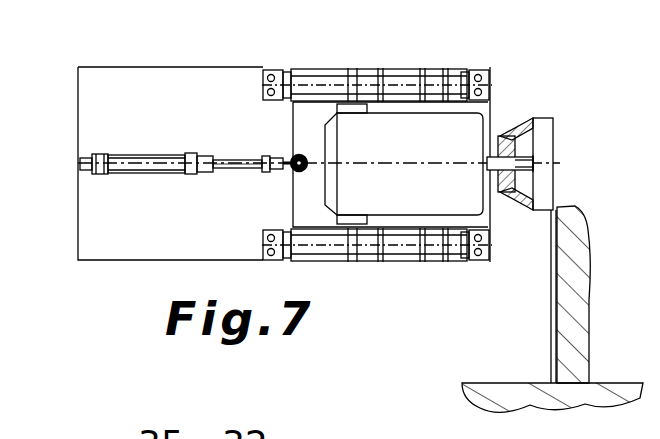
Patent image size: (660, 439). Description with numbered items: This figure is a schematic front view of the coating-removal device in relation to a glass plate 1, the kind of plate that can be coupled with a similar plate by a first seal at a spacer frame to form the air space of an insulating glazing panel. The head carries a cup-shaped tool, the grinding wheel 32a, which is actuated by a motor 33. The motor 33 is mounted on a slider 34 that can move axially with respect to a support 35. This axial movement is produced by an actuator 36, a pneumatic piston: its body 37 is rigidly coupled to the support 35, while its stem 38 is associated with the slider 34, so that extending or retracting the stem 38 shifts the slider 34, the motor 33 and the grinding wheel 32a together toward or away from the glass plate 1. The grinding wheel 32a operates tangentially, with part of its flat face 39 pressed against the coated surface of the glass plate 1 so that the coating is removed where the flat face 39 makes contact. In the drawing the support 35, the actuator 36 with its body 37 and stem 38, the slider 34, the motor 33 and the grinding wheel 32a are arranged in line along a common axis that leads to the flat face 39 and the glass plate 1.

The glass plate 1 is at (527, 320).
The grinding wheel 32a is at (548, 42).
The motor 33 is at (383, 192).
The slider 34 is at (310, 118).
The support 35 is at (153, 80).
The actuator 36 is at (130, 178).
The body 37 is at (122, 154).
The stem 38 is at (232, 158).
The flat face 39 is at (564, 123).